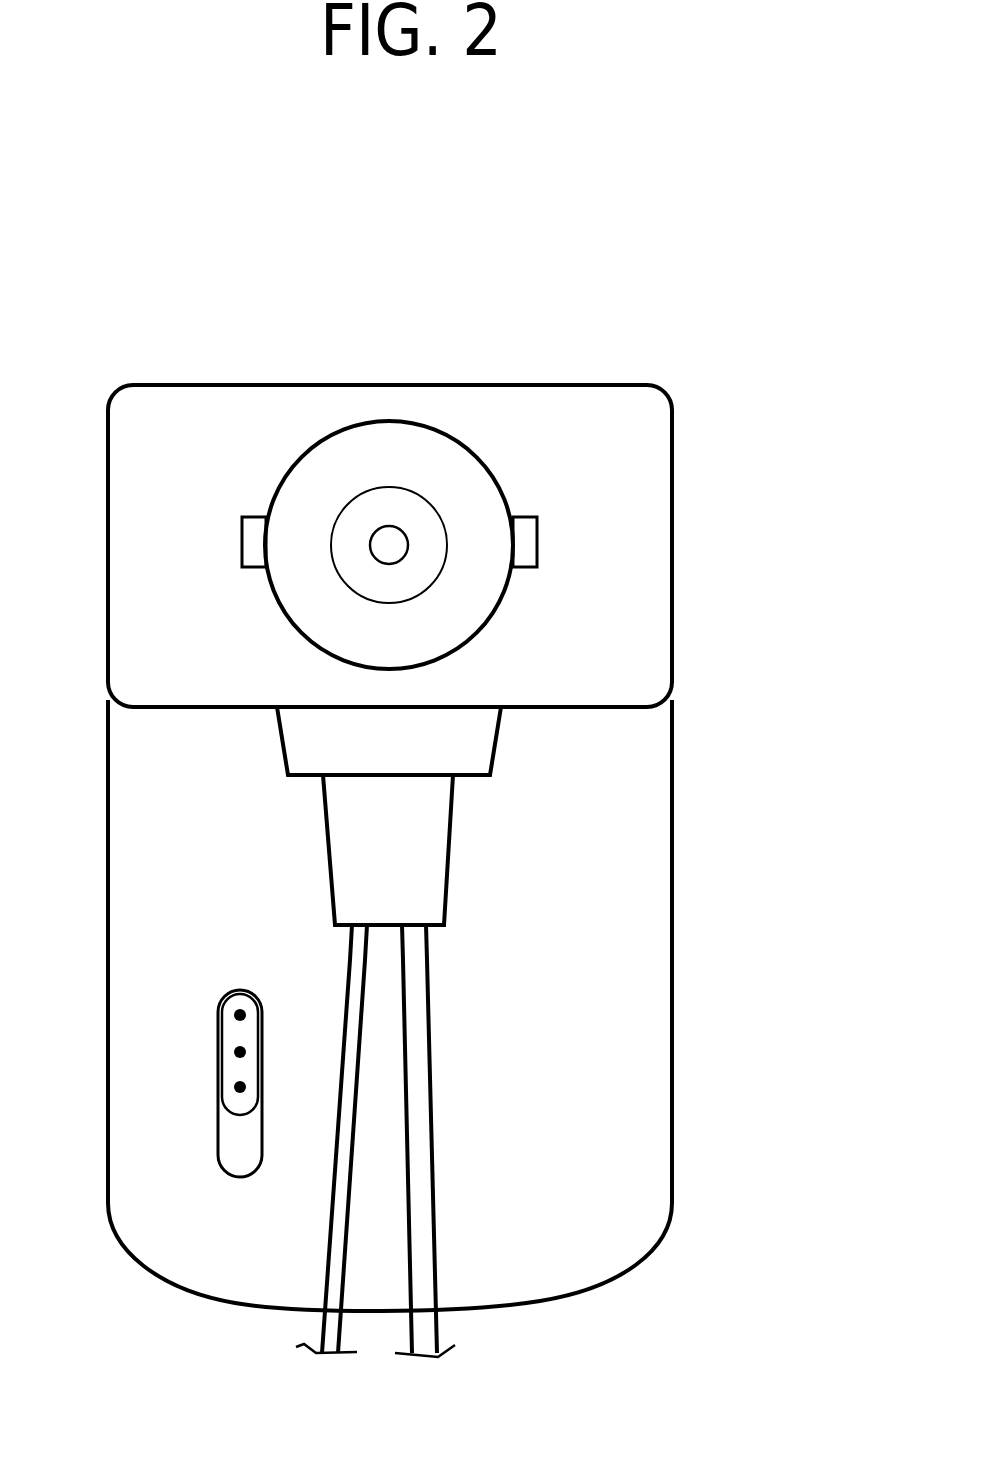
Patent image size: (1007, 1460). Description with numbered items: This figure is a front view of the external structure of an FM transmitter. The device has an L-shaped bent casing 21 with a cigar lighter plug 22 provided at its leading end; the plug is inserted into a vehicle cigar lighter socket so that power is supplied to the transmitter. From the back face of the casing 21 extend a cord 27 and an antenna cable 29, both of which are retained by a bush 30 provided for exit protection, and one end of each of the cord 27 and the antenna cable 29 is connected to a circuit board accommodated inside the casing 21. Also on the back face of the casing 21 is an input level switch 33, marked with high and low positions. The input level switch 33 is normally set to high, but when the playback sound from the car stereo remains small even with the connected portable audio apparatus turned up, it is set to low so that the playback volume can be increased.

The casing 21 is at (650, 438).
The cigar lighter plug 22 is at (414, 460).
The bush 30 is at (438, 840).
The antenna cable 29 is at (317, 1325).
The cord 27 is at (425, 1325).
The input level switch 33 is at (250, 1070).